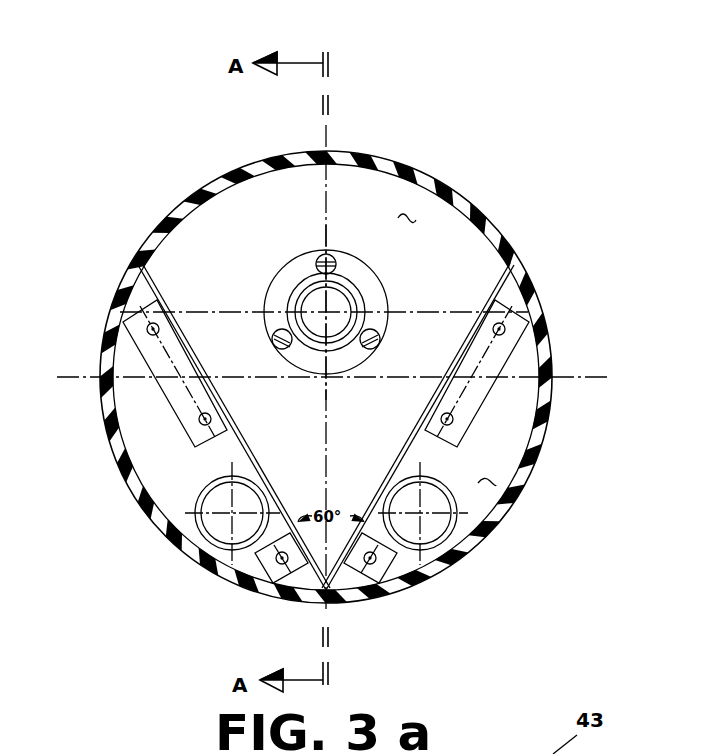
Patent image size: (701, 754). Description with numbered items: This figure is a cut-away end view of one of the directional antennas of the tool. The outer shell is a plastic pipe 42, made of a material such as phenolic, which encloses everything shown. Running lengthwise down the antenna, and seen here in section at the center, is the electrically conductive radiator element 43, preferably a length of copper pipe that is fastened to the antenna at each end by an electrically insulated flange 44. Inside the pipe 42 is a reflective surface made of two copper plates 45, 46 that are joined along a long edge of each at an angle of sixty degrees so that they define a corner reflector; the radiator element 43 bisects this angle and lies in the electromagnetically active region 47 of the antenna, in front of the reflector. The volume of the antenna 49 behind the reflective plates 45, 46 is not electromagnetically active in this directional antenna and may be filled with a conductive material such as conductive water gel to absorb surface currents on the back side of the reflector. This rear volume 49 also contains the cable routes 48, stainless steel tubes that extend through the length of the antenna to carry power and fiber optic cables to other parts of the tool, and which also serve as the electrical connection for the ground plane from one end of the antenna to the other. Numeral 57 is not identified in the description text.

The pipe 42 is at (107, 308).
The radiator element 43 is at (342, 282).
The electrically insulated flange 44 is at (292, 287).
The copper plate 45 is at (492, 278).
The copper plate 46 is at (242, 455).
The electromagnetically active region 47 is at (408, 213).
The cable routes 48 is at (190, 522).
The volume of the antenna 49 is at (487, 487).
The ring segment 57 is at (152, 245).